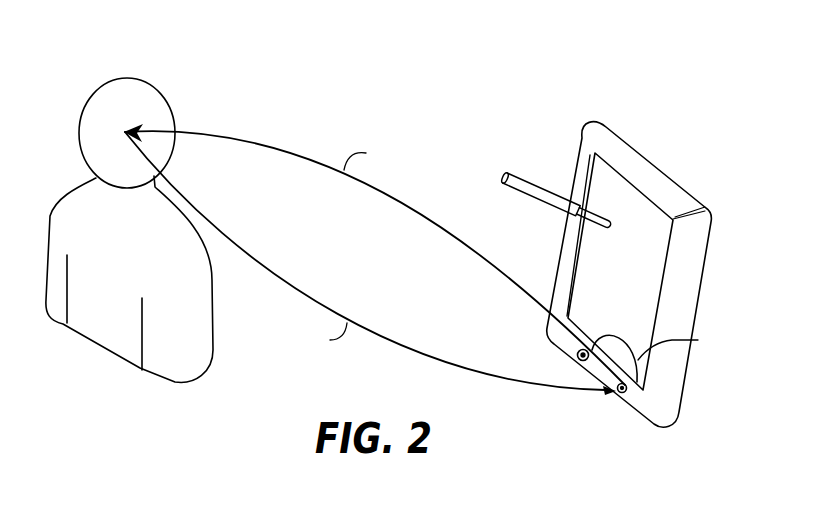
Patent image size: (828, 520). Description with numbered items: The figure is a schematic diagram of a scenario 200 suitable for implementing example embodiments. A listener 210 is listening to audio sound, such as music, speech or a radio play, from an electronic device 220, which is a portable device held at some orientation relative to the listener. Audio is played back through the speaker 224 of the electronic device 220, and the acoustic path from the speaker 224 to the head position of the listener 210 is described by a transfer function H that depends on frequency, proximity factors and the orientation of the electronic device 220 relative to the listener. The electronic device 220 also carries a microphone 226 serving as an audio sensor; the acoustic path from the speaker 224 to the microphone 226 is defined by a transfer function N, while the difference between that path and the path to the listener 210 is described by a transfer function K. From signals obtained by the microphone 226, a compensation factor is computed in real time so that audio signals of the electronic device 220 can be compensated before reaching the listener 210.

The scenario 200 is at (171, 29).
The listener 210 is at (170, 108).
The electronic device 220 is at (578, 160).
The speaker 224 is at (577, 355).
The microphone 226 is at (627, 390).